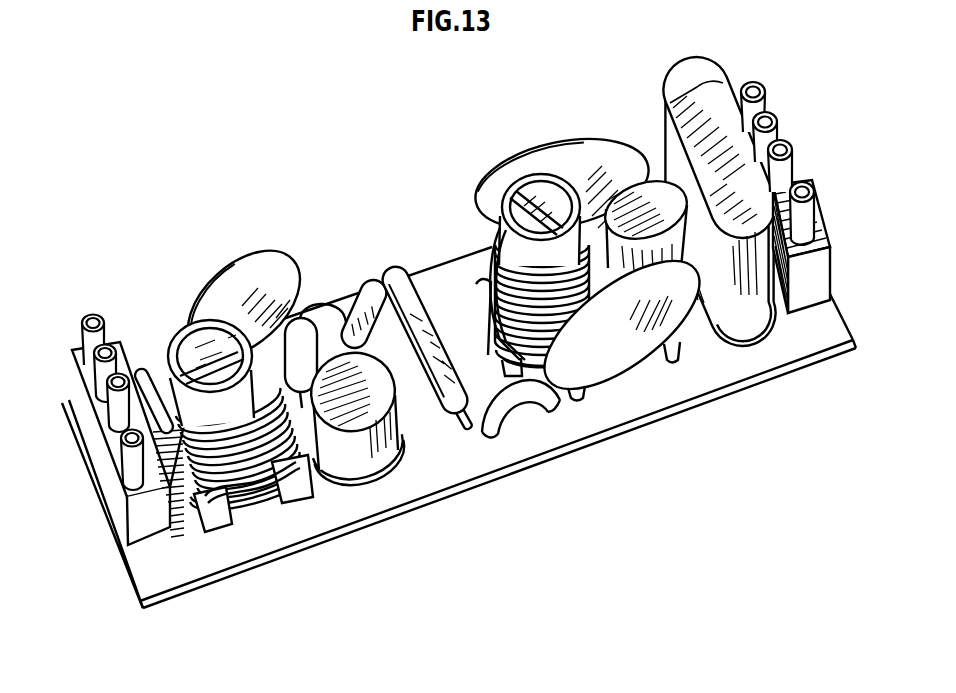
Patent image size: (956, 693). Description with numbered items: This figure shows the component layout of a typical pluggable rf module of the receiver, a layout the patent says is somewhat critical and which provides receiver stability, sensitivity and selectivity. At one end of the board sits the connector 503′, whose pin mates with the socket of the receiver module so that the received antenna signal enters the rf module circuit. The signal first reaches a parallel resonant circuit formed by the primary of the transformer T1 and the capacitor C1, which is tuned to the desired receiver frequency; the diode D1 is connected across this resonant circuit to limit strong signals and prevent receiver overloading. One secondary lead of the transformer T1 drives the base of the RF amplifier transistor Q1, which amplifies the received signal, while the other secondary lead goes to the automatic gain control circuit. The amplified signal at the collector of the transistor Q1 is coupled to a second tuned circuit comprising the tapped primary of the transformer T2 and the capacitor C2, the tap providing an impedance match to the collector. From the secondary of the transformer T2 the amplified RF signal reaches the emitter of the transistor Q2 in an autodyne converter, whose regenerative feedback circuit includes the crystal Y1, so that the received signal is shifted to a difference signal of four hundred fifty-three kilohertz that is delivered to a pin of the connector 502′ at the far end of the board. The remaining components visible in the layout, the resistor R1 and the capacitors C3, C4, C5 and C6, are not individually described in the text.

The connector 503′ is at (122, 489).
The diode D1 is at (163, 388).
The transformer T1 is at (202, 338).
The capacitor C1 is at (247, 260).
The resistor R1 is at (313, 369).
The capacitor C3 is at (360, 293).
The capacitor C2 is at (416, 305).
The RF amplifier transistor Q1 is at (363, 462).
The transformer T2 is at (515, 245).
The capacitor C4 is at (573, 158).
The transistor Q2 is at (650, 188).
The capacitor C5 is at (634, 342).
The capacitor C6 is at (504, 413).
The crystal Y1 is at (710, 90).
The connector 502′ is at (817, 225).